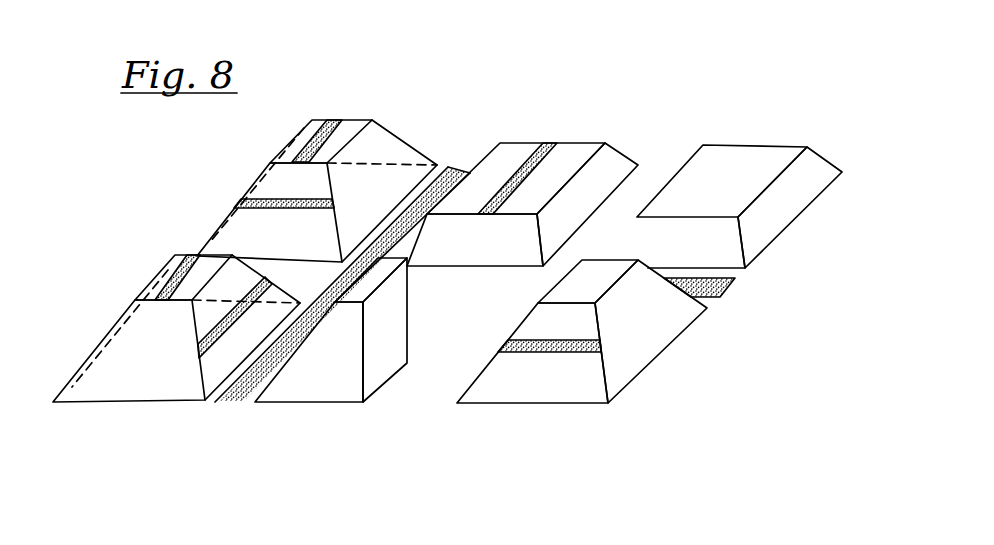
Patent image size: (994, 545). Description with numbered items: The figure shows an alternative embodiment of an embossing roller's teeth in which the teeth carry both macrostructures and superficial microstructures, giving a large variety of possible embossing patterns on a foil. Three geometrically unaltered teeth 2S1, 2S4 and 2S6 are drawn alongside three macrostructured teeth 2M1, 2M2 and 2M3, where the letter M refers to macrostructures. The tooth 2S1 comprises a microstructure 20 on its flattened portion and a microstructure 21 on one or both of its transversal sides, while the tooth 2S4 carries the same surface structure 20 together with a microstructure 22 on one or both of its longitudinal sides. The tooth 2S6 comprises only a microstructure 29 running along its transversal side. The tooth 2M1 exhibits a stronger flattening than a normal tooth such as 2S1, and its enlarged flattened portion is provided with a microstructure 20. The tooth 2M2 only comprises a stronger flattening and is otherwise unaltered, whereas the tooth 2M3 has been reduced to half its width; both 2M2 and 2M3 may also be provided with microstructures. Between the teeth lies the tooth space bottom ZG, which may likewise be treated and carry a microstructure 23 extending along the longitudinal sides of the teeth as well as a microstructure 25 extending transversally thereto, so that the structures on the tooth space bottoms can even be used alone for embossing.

The microstructure 20 is at (342, 120).
The microstructure 21 is at (242, 200).
The microstructure 22 is at (208, 348).
The microstructure 23 is at (450, 167).
The microstructure 25 is at (718, 292).
The microstructure 29 is at (555, 347).
The tooth 2S1 is at (390, 148).
The tooth 2M1 is at (523, 143).
The tooth 2M2 is at (732, 145).
The tooth 2S4 is at (135, 402).
The tooth 2M3 is at (317, 410).
The tooth 2S6 is at (622, 395).
The tooth space bottom ZG is at (428, 373).